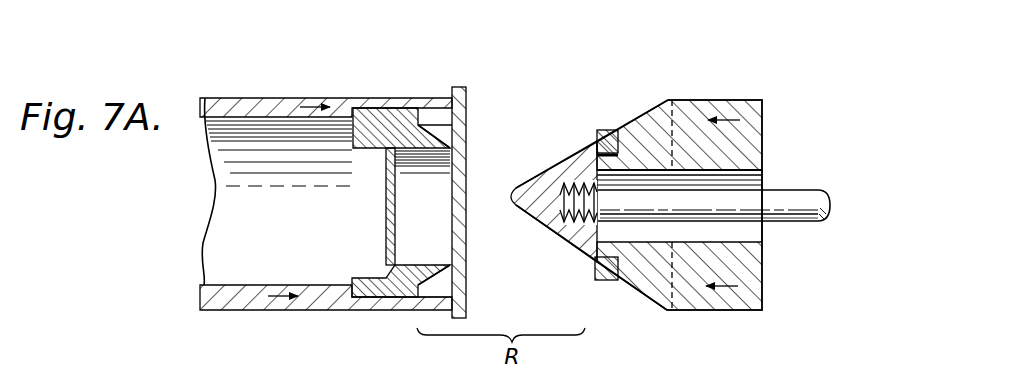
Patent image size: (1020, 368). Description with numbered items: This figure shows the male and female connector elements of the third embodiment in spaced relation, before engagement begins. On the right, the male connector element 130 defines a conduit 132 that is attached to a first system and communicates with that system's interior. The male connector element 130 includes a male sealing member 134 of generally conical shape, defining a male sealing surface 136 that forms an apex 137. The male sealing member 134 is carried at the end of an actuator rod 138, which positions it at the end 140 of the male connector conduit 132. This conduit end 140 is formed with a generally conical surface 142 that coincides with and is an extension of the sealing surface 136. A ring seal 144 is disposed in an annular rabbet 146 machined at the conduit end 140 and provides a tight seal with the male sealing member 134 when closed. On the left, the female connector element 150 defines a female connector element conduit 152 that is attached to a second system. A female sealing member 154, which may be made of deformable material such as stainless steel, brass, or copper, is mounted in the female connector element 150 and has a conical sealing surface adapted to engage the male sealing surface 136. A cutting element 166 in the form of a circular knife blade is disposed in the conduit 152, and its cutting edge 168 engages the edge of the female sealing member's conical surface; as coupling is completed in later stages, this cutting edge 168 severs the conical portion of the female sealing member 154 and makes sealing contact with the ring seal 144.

The male connector element 130 is at (768, 77).
The conduit 132 is at (745, 242).
The male sealing member 134 is at (567, 170).
The male sealing surface 136 is at (571, 234).
The apex 137 is at (526, 207).
The actuator rod 138 is at (808, 189).
The end of the male connector conduit 140 is at (627, 124).
The conical surface 142 is at (656, 99).
The ring seal 144 is at (602, 273).
The annular rabbet 146 is at (651, 258).
The female connector element 150 is at (266, 78).
The female connector element conduit 152 is at (247, 263).
The female sealing member 154 is at (466, 93).
The cutting element 166 is at (367, 122).
The cutting edge 168 is at (437, 136).